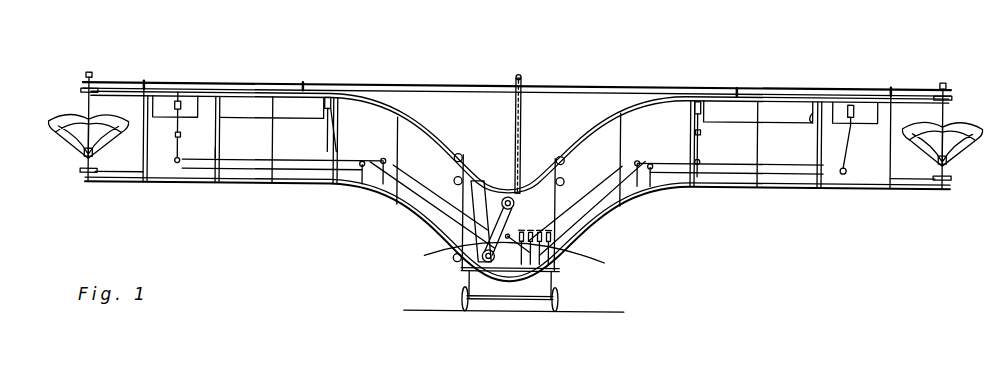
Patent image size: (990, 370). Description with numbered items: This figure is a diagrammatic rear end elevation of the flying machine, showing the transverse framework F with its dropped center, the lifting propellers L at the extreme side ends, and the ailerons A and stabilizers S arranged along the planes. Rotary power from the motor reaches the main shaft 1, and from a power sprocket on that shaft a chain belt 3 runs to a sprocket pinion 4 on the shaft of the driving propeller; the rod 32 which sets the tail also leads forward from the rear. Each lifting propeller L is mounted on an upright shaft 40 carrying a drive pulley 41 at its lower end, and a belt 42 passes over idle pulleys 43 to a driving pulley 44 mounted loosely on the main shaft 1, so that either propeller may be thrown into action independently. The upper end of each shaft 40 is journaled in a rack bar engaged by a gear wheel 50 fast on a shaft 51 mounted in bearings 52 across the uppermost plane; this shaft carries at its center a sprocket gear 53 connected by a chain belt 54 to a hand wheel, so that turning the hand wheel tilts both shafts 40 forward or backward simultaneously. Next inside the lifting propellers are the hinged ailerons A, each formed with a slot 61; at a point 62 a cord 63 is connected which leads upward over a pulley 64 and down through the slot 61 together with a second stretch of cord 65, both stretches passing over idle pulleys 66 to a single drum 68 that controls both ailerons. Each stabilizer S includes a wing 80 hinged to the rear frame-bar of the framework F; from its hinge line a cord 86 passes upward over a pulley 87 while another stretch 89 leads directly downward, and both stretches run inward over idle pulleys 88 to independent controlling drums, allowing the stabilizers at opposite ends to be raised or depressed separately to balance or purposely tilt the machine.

The main shaft 1 is at (465, 269).
The chain belt 3 is at (490, 188).
The sprocket pinion 4 is at (508, 198).
The rod 32 is at (462, 245).
The upright shaft 40 is at (85, 112).
The drive pulley 41 is at (80, 176).
The belt 42 is at (120, 182).
The idle pulleys 43 is at (458, 157).
The driving pulley 44 is at (488, 266).
The gear wheel 50 is at (88, 78).
The shaft 51 is at (158, 88).
The bearings 52 is at (143, 90).
The sprocket gear 53 is at (521, 80).
The chain belt 54 is at (521, 133).
The slot 61 is at (182, 108).
The point 62 is at (175, 114).
The cord 63 is at (182, 142).
The pulley 64 is at (176, 100).
The second stretch of cord 65 is at (176, 152).
The idle pulleys 66 is at (180, 168).
The drum 68 is at (545, 244).
The wing 80 is at (250, 122).
The cord 86 is at (812, 117).
The pulley 87 is at (330, 99).
The idle pulleys 88 is at (215, 150).
The cord stretch 89 is at (216, 147).
The ailerons A is at (190, 101).
The stabilizer S is at (232, 100).
The framework F is at (612, 118).
The lifting propellers L is at (17, 135).